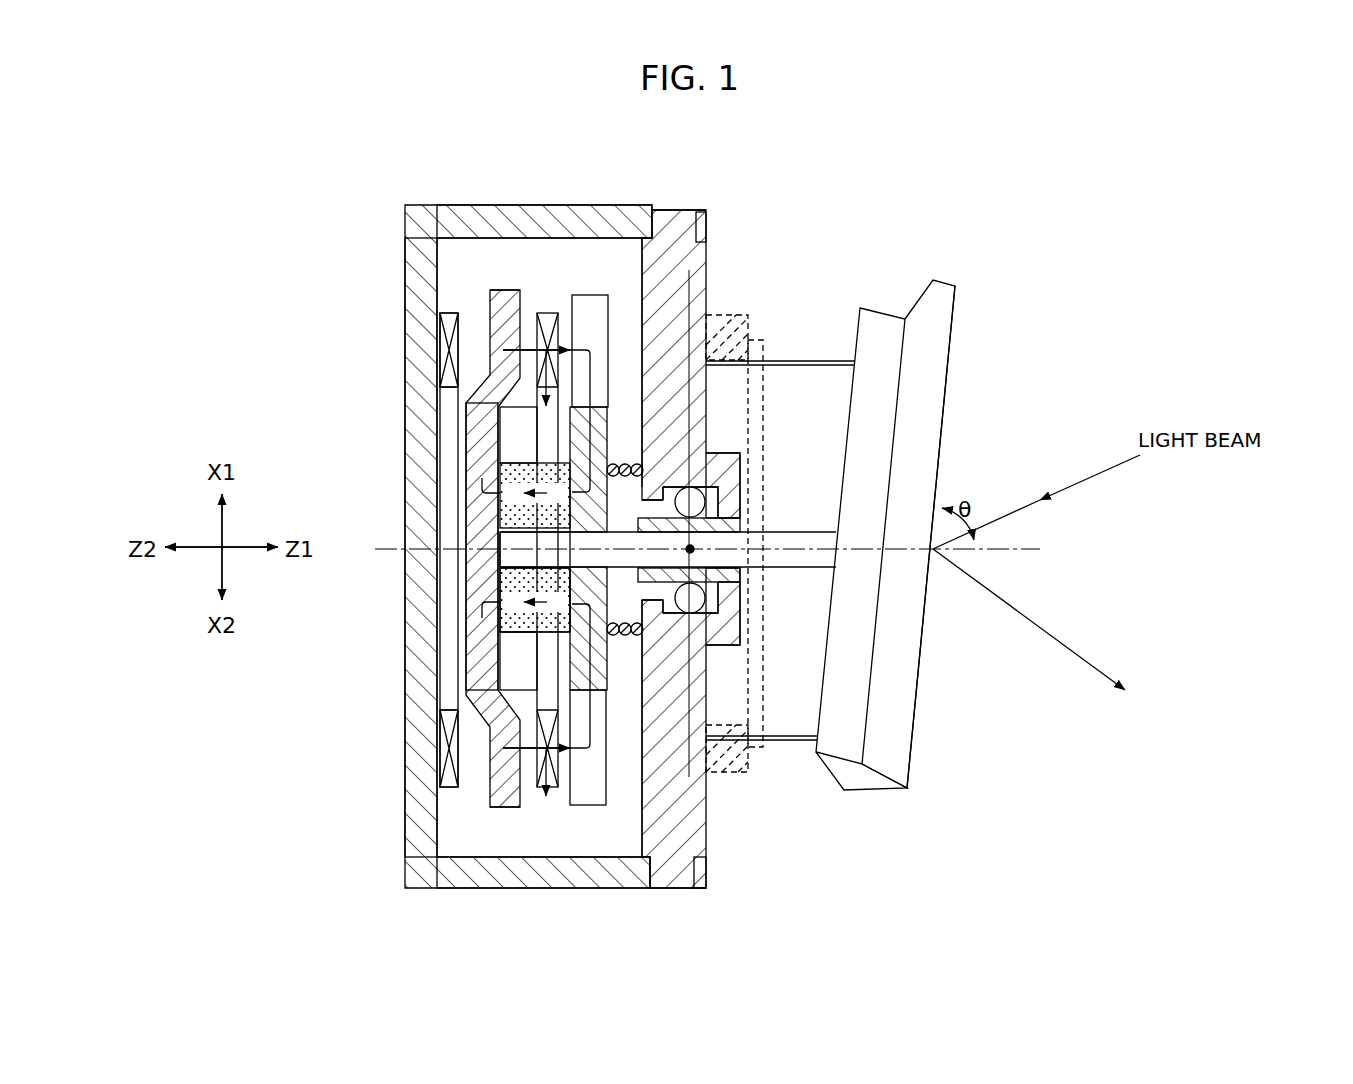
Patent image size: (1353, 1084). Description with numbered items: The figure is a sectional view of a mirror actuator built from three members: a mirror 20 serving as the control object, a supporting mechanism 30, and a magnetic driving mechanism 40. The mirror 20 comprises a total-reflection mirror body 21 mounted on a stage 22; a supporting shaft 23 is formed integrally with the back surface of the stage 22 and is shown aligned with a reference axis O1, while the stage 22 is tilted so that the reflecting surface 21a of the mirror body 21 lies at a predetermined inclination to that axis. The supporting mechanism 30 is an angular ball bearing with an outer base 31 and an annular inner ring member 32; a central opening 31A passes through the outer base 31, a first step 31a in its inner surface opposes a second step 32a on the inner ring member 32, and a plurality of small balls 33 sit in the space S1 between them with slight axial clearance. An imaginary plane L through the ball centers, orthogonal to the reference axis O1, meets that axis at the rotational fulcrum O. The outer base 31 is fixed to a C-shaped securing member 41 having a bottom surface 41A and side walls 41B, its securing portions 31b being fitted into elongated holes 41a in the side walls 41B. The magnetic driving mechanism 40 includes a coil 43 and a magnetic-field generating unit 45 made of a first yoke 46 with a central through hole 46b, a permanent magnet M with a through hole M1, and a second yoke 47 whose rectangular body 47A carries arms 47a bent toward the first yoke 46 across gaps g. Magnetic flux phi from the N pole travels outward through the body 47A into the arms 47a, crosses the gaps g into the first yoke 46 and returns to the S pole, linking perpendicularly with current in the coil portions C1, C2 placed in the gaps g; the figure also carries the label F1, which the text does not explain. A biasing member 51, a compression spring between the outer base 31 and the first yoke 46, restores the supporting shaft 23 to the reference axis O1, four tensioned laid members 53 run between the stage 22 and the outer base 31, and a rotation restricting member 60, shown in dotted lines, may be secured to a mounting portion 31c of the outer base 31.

The mirror 20 is at (914, 544).
The mirror body 21 is at (893, 733).
The reflecting surface 21a is at (919, 642).
The stage 22 is at (853, 788).
The supporting shaft 23 is at (812, 534).
The supporting mechanism 30 is at (730, 452).
The outer base 31 is at (690, 822).
The first step 31a is at (657, 595).
The securing portions 31b is at (678, 213).
The mounting portion 31c is at (740, 313).
The opening 31A is at (725, 602).
The inner ring member 32 is at (732, 573).
The second step 32a is at (700, 502).
The small balls 33 is at (676, 484).
The magnetic driving mechanism 40 is at (608, 130).
The securing member 41 is at (400, 880).
The elongated holes 41a is at (708, 220).
The bottom surface 41A is at (415, 304).
The side walls 41B is at (633, 215).
The coil 43 is at (466, 300).
The magnetic-field generating unit 45 is at (610, 168).
The first yoke 46 is at (601, 292).
The through hole 46b is at (520, 538).
The second yoke 47 is at (510, 288).
The arms 47a is at (497, 288).
The body 47A is at (466, 618).
The biasing member 51 is at (623, 642).
The laid members 53 is at (812, 360).
The rotation restricting member 60 is at (772, 730).
The coil portion C1 is at (442, 352).
The coil portion C2 is at (443, 760).
The force F1 is at (543, 840).
The permanent magnet M is at (500, 490).
The through hole M1 is at (500, 572).
The rotational fulcrum O is at (740, 578).
The reference axis O1 is at (711, 550).
The space S1 is at (672, 486).
The imaginary plane L is at (692, 278).
The gaps g is at (556, 294).
The magnetic flux phi is at (470, 428).